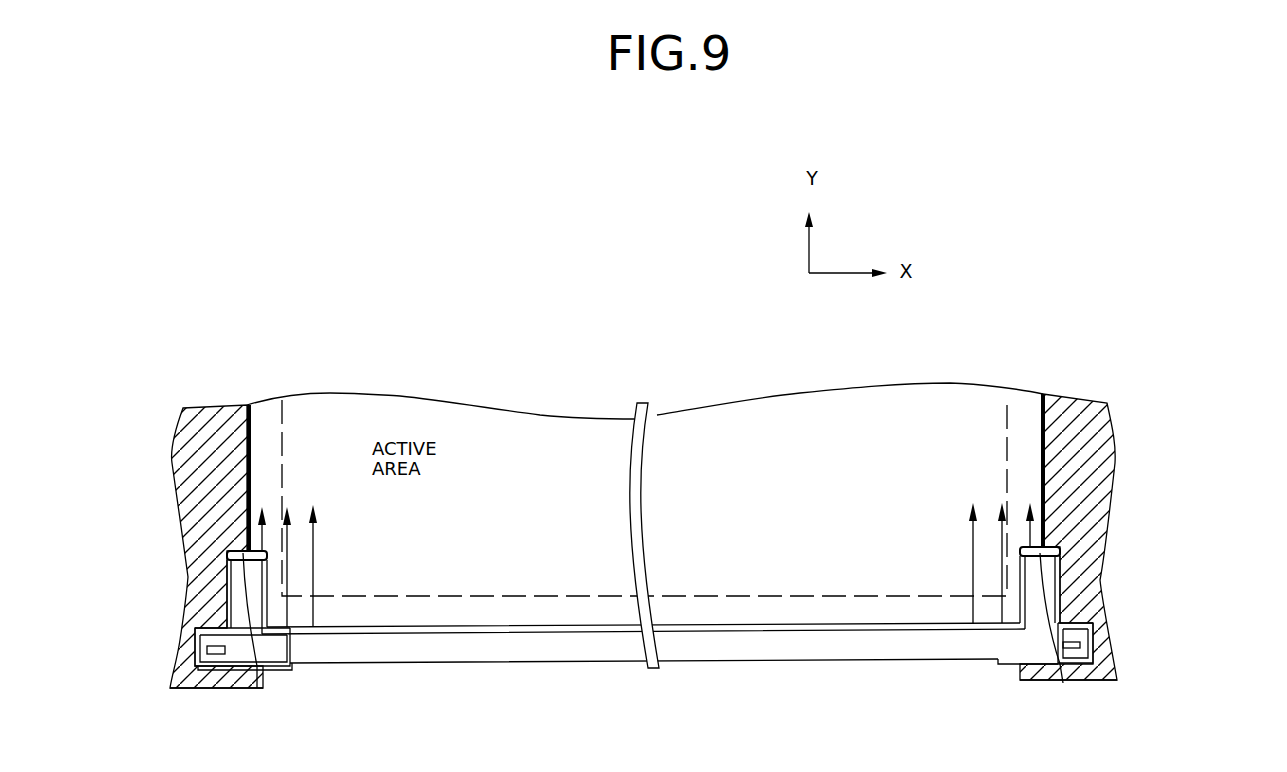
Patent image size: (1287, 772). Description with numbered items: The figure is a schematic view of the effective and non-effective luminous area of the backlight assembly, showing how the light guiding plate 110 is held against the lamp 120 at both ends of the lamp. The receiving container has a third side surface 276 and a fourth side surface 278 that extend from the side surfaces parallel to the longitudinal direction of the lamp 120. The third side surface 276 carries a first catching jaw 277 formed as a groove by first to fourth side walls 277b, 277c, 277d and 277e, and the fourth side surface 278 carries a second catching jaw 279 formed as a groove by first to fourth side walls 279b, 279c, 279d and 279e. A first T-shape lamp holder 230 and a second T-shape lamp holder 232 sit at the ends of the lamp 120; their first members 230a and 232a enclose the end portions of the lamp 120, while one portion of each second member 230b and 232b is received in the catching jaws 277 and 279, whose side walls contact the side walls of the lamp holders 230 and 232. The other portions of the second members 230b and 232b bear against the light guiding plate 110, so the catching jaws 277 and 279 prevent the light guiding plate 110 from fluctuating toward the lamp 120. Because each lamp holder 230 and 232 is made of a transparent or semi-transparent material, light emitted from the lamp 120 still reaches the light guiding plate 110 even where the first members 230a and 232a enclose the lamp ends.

The light guiding plate 110 is at (472, 420).
The lamp 120 is at (430, 653).
The lamp holder 230 is at (297, 684).
The first member 230a is at (211, 668).
The second member 230b is at (257, 688).
The lamp holder 232 is at (988, 680).
The first member 232a is at (1027, 683).
The second member 232b is at (1063, 683).
The third side surface 276 is at (1107, 466).
The first catching jaw 277 is at (1145, 577).
The first side wall 277b is at (1060, 547).
The second side wall 277c is at (1061, 582).
The third side wall 277d is at (1090, 624).
The fourth side wall 277e is at (1128, 642).
The fourth side surface 278 is at (180, 448).
The second catching jaw 279 is at (166, 574).
The first side wall 279b is at (233, 549).
The second side wall 279c is at (227, 580).
The third side wall 279d is at (197, 628).
The fourth side wall 279e is at (199, 647).